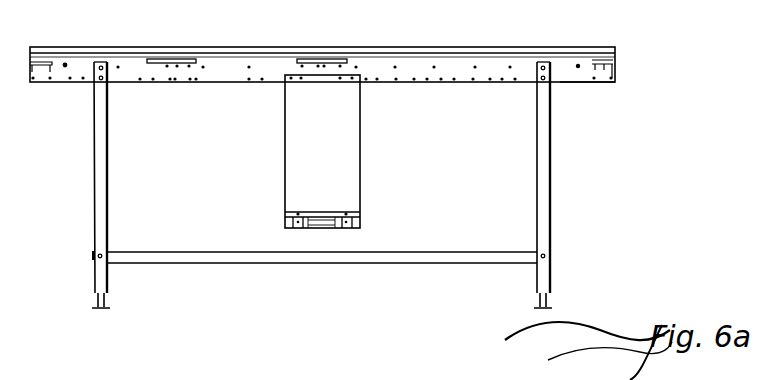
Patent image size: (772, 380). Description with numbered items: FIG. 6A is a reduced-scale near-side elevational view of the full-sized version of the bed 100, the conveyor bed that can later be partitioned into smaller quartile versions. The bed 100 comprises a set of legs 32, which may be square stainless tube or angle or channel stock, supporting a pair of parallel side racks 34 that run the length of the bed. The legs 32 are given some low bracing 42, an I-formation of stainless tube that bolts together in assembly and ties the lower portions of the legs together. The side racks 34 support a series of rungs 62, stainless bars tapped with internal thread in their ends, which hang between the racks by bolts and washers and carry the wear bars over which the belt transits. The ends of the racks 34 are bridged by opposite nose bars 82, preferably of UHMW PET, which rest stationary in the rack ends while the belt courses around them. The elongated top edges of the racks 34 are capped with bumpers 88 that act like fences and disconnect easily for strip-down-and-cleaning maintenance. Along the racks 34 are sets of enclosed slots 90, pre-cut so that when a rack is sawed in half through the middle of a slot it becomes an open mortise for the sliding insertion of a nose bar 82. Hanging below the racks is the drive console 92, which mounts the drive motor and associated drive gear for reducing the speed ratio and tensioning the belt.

The bed 100 is at (582, 137).
The bumper 88 is at (543, 48).
The enclosed slot 90 is at (168, 58).
The nose bar 82 is at (603, 58).
The rung 62 is at (65, 66).
The side rack 34 is at (473, 83).
The leg 32 is at (97, 152).
The low bracing 42 is at (410, 254).
The drive console 92 is at (343, 165).